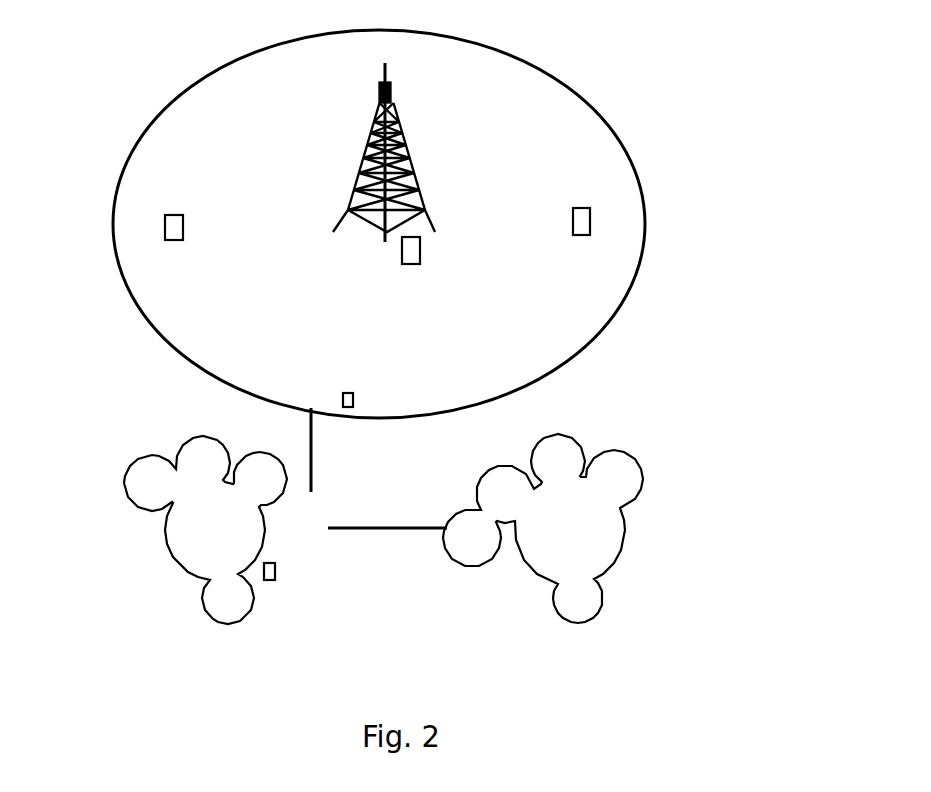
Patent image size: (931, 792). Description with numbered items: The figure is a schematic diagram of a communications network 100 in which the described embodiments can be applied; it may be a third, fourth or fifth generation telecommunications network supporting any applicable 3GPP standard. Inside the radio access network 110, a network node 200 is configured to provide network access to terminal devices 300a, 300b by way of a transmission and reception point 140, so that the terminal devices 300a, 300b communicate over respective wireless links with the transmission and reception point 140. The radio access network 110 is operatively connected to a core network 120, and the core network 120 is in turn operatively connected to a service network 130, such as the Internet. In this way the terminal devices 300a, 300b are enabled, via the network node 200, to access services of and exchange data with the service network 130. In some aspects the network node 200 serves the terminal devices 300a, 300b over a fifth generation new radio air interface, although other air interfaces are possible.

The communications network 100 is at (697, 149).
The radio access network 110 is at (163, 342).
The core network 120 is at (139, 498).
The service network 130 is at (539, 493).
The transmission and reception point 140 is at (380, 82).
The network node 200 is at (402, 252).
The terminal device 300a is at (174, 241).
The terminal device 300b is at (583, 236).